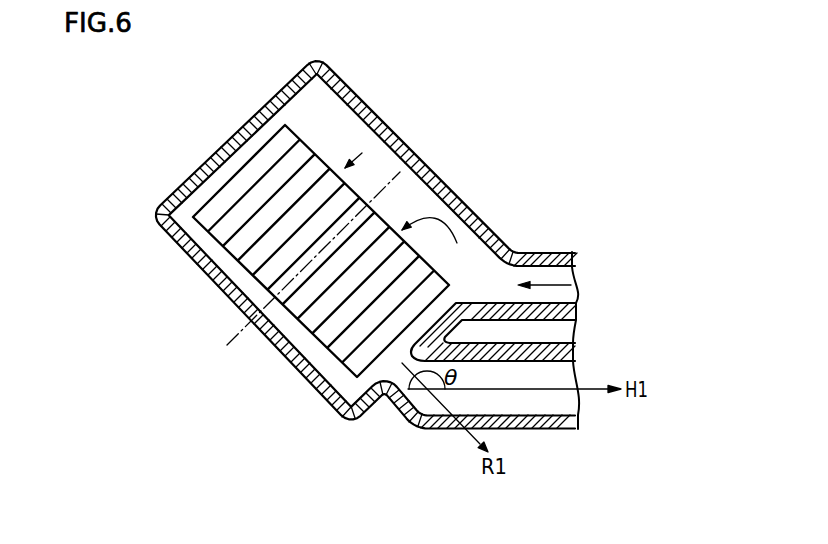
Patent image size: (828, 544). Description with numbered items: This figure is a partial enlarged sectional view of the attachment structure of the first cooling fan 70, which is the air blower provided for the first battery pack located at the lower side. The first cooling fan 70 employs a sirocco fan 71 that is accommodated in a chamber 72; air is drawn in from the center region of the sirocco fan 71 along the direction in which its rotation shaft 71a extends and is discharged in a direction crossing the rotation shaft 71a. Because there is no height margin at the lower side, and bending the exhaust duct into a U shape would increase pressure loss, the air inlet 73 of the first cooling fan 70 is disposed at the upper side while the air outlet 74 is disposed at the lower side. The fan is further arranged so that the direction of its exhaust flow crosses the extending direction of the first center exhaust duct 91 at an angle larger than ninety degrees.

The first cooling fan 70 is at (288, 498).
The sirocco fan 71 is at (353, 372).
The rotation shaft 71a is at (447, 128).
The chamber 72 is at (318, 385).
The air inlet 73 is at (523, 297).
The air outlet 74 is at (400, 375).
The first center exhaust duct 91 is at (563, 418).